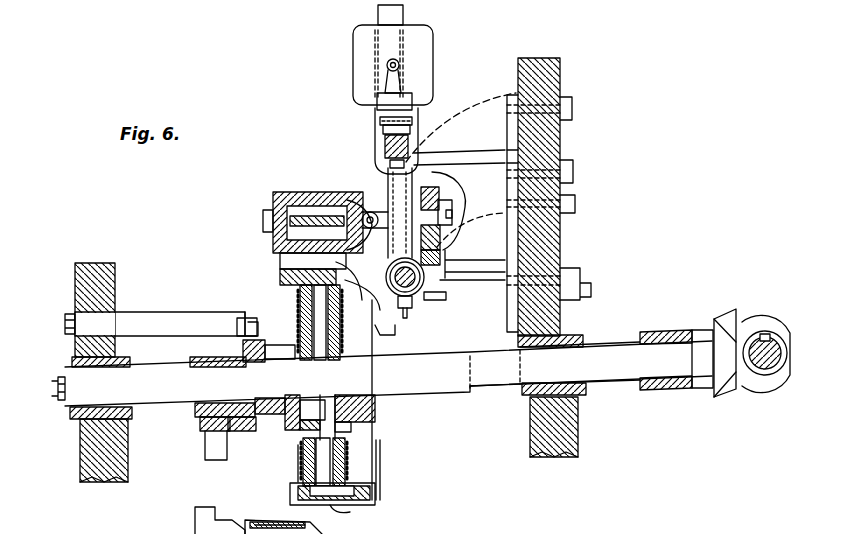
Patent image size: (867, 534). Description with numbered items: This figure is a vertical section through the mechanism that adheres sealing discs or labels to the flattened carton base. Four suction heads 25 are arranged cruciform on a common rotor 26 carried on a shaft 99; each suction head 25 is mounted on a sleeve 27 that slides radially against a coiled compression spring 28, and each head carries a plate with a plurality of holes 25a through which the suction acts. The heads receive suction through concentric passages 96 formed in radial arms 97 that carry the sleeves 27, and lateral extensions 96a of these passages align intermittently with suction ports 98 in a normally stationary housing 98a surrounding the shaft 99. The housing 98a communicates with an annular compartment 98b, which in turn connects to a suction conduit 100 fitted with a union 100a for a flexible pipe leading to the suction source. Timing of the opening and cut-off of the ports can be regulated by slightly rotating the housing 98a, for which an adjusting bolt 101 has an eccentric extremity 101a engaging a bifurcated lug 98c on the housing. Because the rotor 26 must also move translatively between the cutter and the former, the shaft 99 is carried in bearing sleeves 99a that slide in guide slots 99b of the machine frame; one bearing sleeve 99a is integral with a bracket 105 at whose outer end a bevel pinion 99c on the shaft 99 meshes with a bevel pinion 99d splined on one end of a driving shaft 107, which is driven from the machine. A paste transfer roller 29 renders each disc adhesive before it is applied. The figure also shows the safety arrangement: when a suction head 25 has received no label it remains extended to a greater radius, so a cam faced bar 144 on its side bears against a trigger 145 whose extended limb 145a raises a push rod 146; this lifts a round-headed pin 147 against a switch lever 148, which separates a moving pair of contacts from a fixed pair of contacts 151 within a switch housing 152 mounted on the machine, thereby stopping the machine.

The suction head 25 is at (286, 284).
The holes 25a is at (352, 508).
The rotor 26 is at (391, 332).
The sleeve 27 is at (302, 322).
The coiled compression spring 28 is at (350, 443).
The paste transfer roller 29 is at (305, 193).
The concentric passages 96 is at (327, 395).
The lateral extensions 96a is at (300, 405).
The radial arms 97 is at (300, 305).
The suction ports 98 is at (243, 350).
The housing 98a is at (243, 443).
The annular compartment 98b is at (200, 428).
The bifurcated lug 98c is at (238, 324).
The shaft 99 is at (469, 354).
The bearing sleeves 99a is at (130, 362).
The guide slots 99b is at (90, 362).
The bevel pinion 99c is at (718, 388).
The bevel pinion 99d is at (760, 392).
The suction conduit 100 is at (240, 398).
The union 100a is at (206, 452).
The adjusting bolt 101 is at (153, 318).
The eccentric extremity 101a is at (248, 318).
The bracket 105 is at (668, 332).
The driving shaft 107 is at (758, 320).
The cam faced bar 144 is at (372, 312).
The trigger 145 is at (375, 206).
The extended limb 145a is at (460, 205).
The push rod 146 is at (413, 137).
The round-headed pin 147 is at (384, 116).
The switch lever 148 is at (402, 88).
The fixed pair of contacts 151 is at (285, 522).
The housing 152 is at (422, 57).